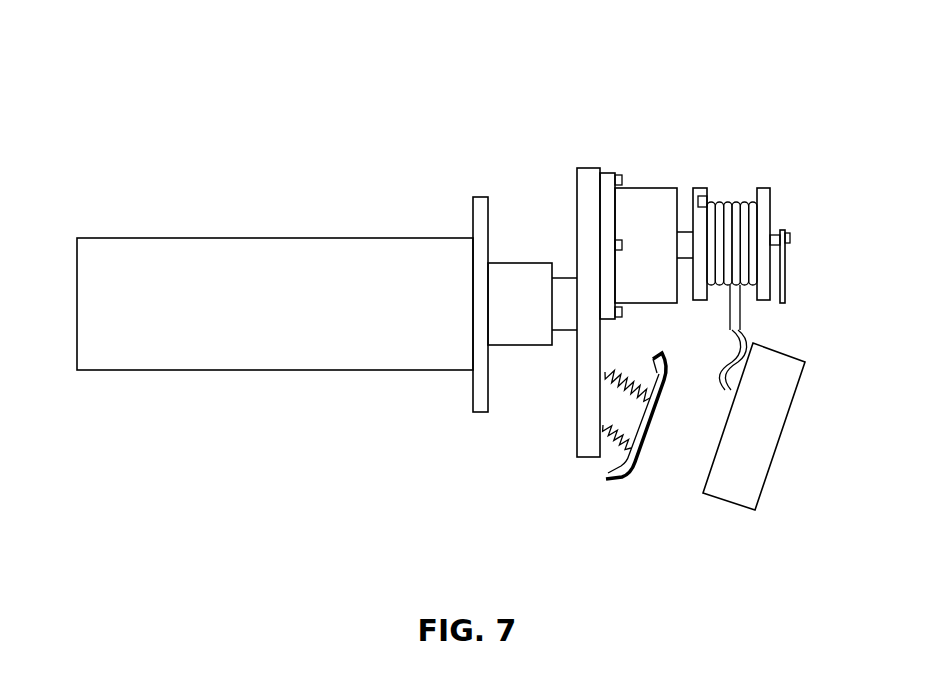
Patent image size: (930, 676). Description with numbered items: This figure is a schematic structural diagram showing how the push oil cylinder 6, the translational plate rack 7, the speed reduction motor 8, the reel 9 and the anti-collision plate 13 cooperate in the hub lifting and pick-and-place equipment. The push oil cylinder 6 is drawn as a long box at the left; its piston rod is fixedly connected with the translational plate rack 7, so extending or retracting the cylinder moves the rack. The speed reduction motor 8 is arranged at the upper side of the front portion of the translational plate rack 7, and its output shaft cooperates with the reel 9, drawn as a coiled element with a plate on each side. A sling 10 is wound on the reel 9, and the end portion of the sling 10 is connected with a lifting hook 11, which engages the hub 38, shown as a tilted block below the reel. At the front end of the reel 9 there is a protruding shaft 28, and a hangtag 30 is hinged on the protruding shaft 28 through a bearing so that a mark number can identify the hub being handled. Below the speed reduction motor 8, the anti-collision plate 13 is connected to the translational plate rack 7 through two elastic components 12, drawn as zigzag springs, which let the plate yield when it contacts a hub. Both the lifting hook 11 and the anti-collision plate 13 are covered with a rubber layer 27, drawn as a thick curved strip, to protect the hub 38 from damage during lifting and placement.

The push oil cylinder 6 is at (213, 287).
The translational plate rack 7 is at (587, 443).
The speed reduction motor 8 is at (635, 275).
The reel 9 is at (698, 207).
The sling 10 is at (720, 201).
The lifting hook 11 is at (740, 335).
The elastic component 12 is at (603, 426).
The anti-collision plate 13 is at (653, 380).
The rubber layer 27 is at (603, 477).
The protruding shaft 28 is at (781, 232).
The hangtag 30 is at (723, 430).
The hub 38 is at (733, 465).